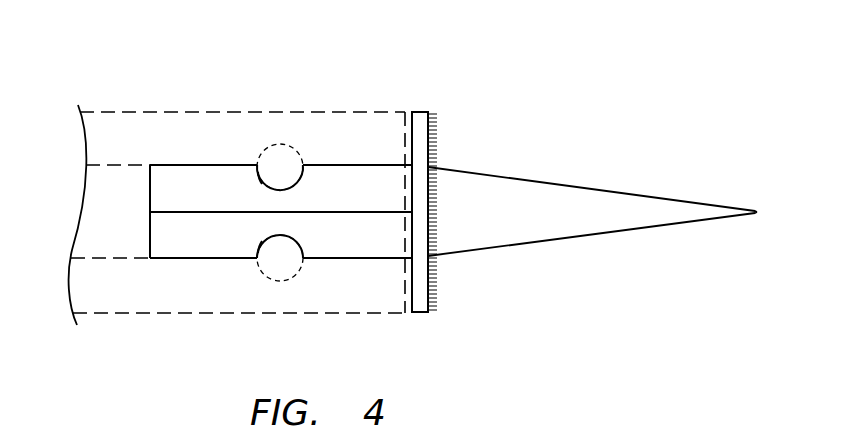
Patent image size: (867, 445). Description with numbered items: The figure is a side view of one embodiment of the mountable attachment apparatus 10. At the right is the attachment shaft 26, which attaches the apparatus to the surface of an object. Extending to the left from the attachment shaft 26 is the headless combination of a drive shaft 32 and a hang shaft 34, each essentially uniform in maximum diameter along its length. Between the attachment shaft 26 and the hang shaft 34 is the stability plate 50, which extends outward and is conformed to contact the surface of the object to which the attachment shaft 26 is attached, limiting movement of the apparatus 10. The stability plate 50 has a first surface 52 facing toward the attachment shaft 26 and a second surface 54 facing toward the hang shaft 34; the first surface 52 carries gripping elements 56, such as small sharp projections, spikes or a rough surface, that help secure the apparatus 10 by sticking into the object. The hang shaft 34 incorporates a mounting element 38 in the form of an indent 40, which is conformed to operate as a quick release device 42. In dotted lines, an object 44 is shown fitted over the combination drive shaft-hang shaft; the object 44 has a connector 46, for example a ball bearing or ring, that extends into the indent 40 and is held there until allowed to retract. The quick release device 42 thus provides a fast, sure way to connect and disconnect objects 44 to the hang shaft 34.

The mountable attachment apparatus 10 is at (617, 74).
The attachment shaft 26 is at (592, 187).
The drive shaft 32 is at (175, 185).
The hang shaft 34 is at (352, 187).
The mounting element 38 is at (310, 253).
The indent 40 is at (259, 181).
The quick release device 42 is at (273, 148).
The object 44 is at (205, 112).
The connector 46 is at (273, 160).
The stability plate 50 is at (420, 112).
The first surface 52 is at (430, 312).
The second surface 54 is at (408, 299).
The gripping element 56 is at (434, 188).